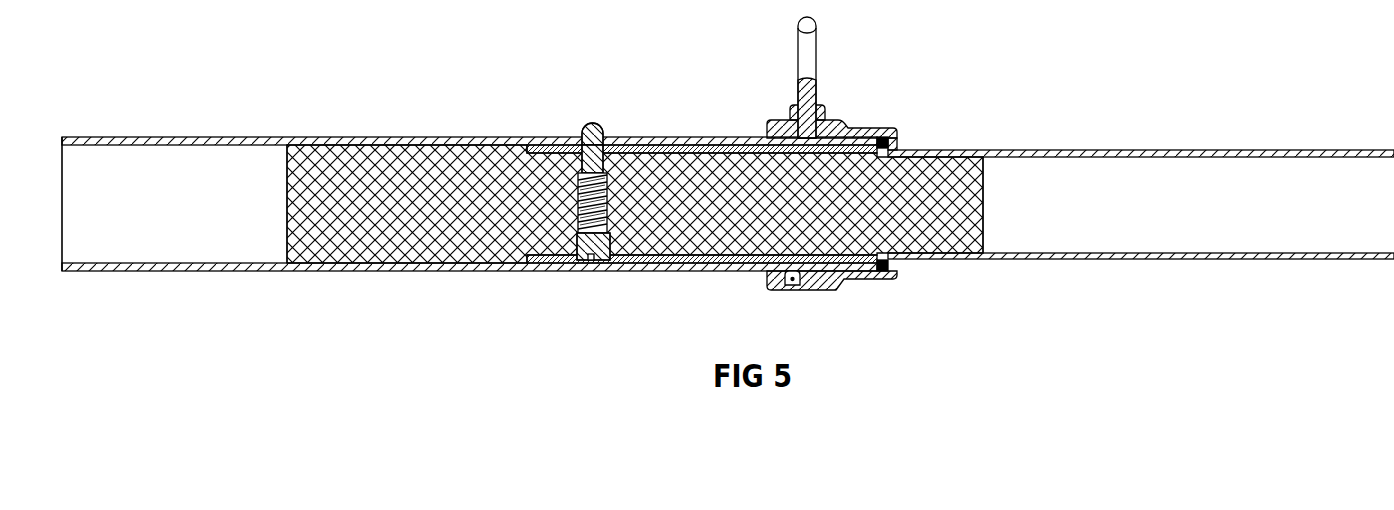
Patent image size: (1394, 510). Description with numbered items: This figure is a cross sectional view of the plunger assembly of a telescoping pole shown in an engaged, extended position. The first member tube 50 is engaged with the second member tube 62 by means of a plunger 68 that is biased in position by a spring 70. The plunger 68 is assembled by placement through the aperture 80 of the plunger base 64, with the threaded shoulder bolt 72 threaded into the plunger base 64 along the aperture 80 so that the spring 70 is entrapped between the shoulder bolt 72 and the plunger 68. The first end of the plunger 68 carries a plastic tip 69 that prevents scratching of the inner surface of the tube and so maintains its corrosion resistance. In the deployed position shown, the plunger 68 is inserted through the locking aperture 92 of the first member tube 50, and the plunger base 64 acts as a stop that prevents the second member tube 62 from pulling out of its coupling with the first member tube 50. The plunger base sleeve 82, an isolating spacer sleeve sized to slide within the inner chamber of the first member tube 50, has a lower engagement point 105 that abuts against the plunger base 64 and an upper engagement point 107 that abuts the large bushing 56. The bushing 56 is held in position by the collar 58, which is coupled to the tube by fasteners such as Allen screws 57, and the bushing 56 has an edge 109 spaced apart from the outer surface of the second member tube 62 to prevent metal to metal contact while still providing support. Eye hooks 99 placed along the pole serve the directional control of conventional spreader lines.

The first member tube 50 is at (469, 237).
The large bushing 56 is at (946, 117).
The Allen screws 57 is at (834, 304).
The first collar 58 is at (895, 177).
The second member tube 62 is at (1141, 165).
The plunger base 64 is at (572, 241).
The plunger 68 is at (561, 168).
The plastic tip 69 is at (506, 72).
The spring 70 is at (637, 183).
The threaded shoulder bolt 72 is at (560, 285).
The aperture 80 is at (645, 255).
The plunger base sleeve 82 is at (702, 91).
The locking aperture 92 is at (506, 106).
The eye hooks 99 is at (734, 69).
The lower engagement point 105 is at (637, 296).
The upper engagement point 107 is at (906, 94).
The edge 109 is at (950, 298).